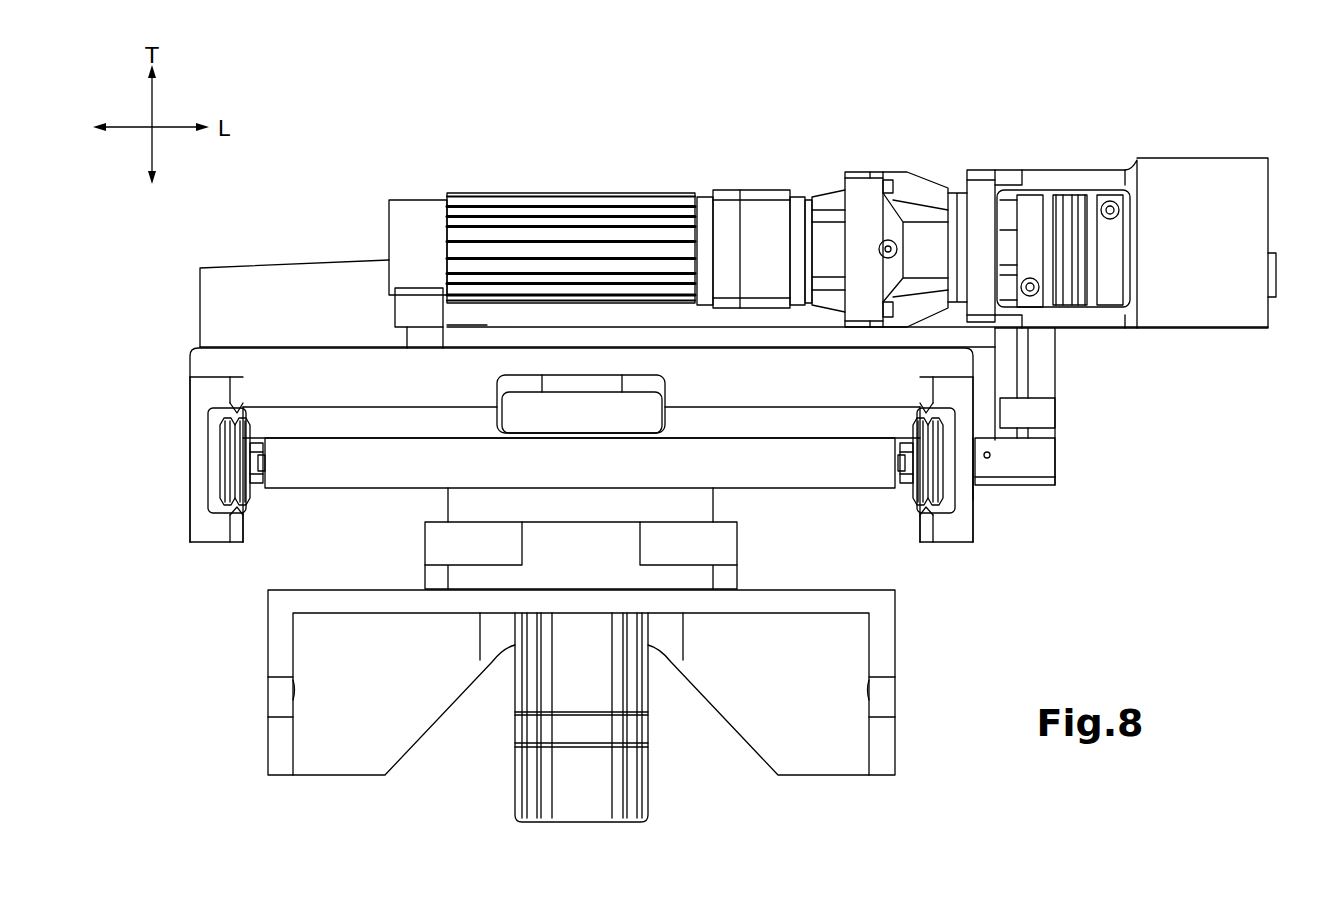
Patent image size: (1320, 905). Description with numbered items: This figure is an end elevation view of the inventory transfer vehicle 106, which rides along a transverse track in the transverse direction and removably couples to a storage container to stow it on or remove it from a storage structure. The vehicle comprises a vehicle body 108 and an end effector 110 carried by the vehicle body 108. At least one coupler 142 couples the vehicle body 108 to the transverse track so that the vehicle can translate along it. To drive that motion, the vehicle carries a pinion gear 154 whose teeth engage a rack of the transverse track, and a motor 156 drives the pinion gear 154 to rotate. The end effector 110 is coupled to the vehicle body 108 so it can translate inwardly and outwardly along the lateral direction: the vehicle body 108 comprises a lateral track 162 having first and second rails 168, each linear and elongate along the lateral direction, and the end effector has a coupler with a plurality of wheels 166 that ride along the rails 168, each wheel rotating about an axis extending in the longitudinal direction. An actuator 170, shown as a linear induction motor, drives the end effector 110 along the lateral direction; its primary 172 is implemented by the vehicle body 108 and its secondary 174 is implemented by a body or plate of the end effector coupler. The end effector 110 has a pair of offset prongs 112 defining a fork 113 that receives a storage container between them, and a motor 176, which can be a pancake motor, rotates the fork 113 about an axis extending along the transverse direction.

The inventory transfer vehicle 106 is at (812, 140).
The vehicle body 108 is at (176, 360).
The end effector 110 is at (263, 565).
The prongs 112 is at (268, 775).
The fork 113 is at (295, 762).
The coupler 142 is at (1055, 385).
The pinion gear 154 is at (1071, 210).
The motor 156 is at (612, 205).
The lateral track 162 is at (262, 507).
The wheels 166 is at (233, 467).
The rail 168 is at (244, 528).
The actuator 170 is at (470, 387).
The primary 172 is at (638, 408).
The secondary 174 is at (368, 462).
The motor 176 is at (512, 735).